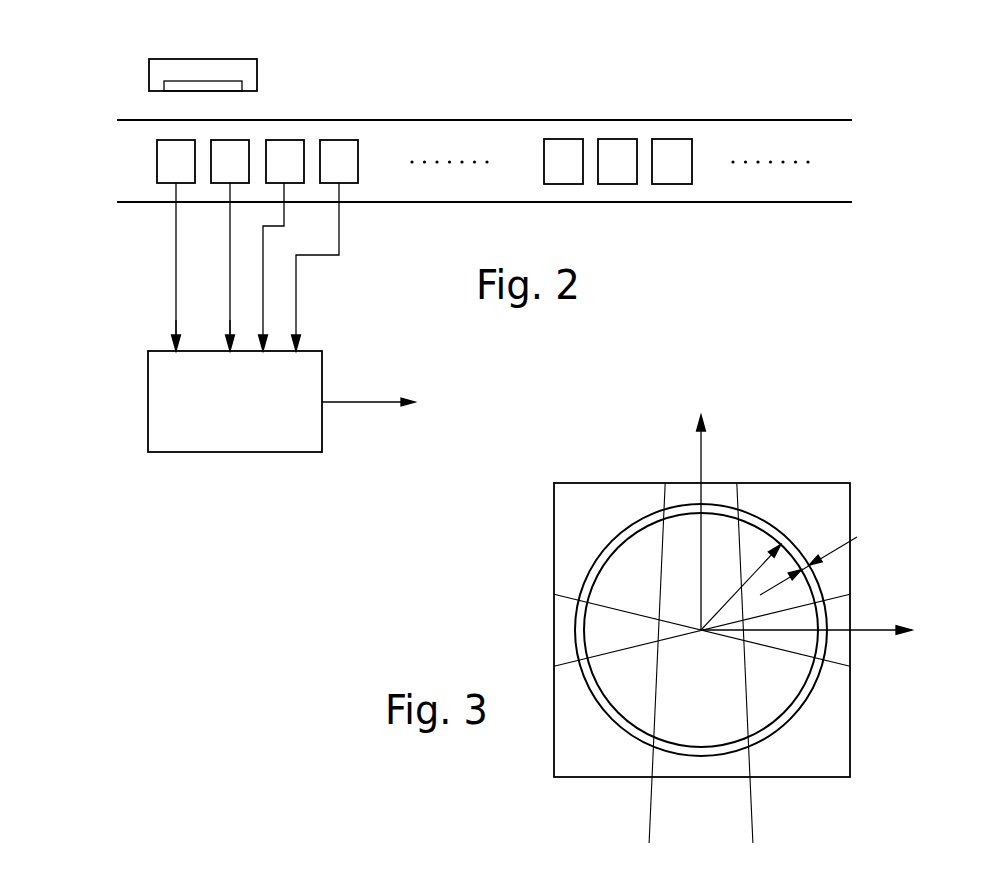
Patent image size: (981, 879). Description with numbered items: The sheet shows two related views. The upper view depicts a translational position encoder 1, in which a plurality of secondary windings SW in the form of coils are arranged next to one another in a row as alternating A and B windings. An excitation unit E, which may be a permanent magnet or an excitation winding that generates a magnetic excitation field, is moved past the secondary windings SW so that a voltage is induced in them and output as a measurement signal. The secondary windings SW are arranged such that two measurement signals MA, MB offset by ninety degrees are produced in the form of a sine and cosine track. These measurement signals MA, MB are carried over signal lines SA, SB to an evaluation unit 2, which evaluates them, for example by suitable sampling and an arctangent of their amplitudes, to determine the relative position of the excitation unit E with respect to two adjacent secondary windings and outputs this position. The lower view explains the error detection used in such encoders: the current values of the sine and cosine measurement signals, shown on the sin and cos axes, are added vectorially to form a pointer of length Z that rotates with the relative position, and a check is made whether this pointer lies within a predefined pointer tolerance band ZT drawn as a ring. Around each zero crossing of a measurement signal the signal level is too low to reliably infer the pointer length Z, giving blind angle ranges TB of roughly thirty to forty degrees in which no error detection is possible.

In FIG. 2, the position encoder 1 is at (322, 85).
In FIG. 2, the excitation unit E is at (217, 82).
In FIG. 2, the secondary windings SW is at (128, 153).
In FIG. 2, the signal line SA is at (173, 228).
In FIG. 2, the signal line SB is at (230, 268).
In FIG. 2, the measurement signal MA is at (154, 329).
In FIG. 2, the measurement signal MB is at (209, 329).
In FIG. 2, the evaluation unit 2 is at (248, 418).
In FIG. 3, the blind angle range TB is at (692, 535).
In FIG. 3, the pointer length Z is at (741, 587).
In FIG. 3, the pointer tolerance band ZT is at (808, 559).
In FIG. 3, the cosine measurement signal cos is at (727, 522).
In FIG. 3, the sine measurement signal sin is at (806, 616).